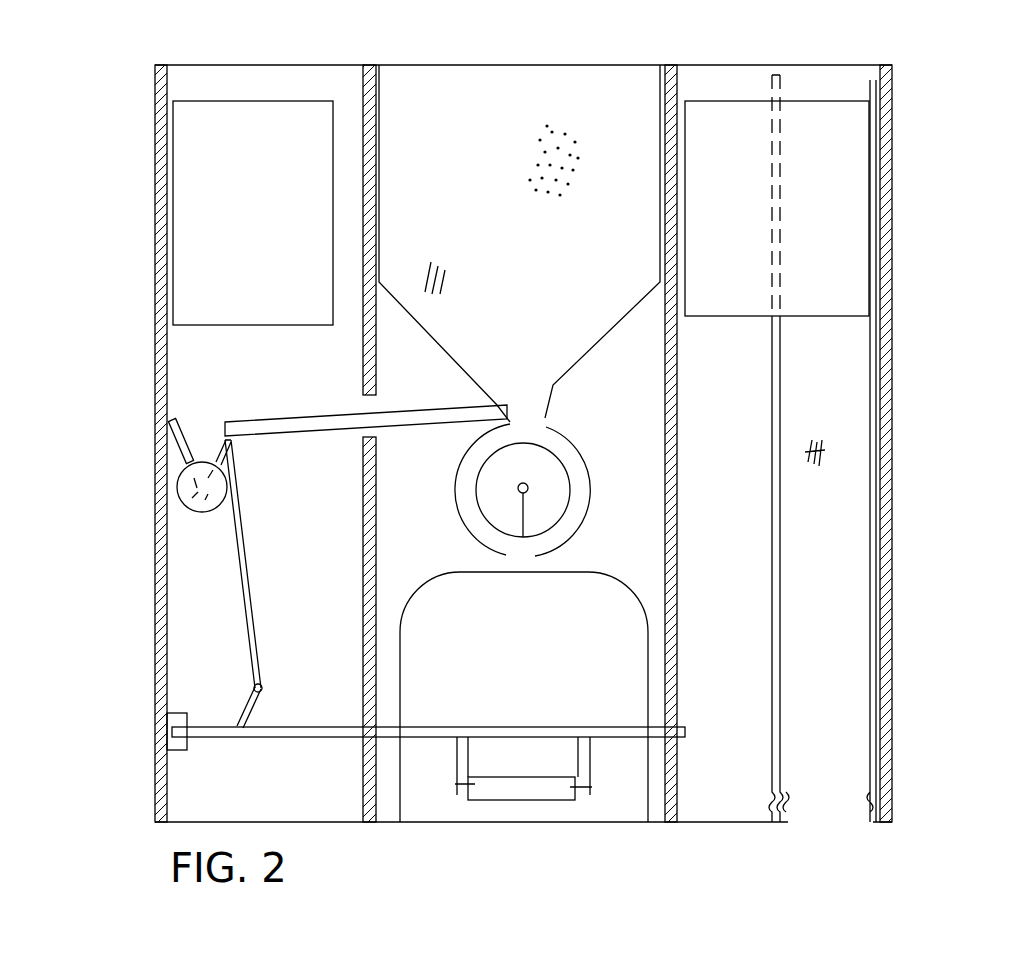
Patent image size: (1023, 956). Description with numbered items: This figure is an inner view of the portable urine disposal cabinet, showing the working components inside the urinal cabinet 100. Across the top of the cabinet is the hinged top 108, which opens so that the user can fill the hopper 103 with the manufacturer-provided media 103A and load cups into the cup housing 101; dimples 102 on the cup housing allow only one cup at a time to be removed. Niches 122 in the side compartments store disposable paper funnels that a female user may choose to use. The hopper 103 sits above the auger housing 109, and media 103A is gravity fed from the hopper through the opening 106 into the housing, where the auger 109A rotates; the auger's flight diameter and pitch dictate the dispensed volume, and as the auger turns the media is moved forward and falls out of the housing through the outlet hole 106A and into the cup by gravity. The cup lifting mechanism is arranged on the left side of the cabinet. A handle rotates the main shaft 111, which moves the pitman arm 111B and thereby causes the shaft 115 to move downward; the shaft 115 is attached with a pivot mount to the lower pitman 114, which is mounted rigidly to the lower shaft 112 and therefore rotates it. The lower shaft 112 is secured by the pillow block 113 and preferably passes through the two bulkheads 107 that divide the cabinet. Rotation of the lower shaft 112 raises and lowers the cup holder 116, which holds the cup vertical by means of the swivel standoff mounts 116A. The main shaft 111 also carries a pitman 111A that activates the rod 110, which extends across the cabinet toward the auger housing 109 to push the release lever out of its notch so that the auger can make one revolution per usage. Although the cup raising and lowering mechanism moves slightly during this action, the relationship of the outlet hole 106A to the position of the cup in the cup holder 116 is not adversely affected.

The urinal cabinet 100 is at (889, 330).
The cup housing 101 is at (808, 452).
The dimples 102 is at (775, 803).
The hopper 103 is at (442, 304).
The media 103A is at (541, 193).
The opening 106 is at (519, 412).
The outlet hole 106A is at (522, 556).
The bulkheads 107 is at (404, 24).
The top 108 is at (531, 62).
The housing 109 is at (589, 453).
The auger 109A is at (545, 495).
The rod 110 is at (310, 420).
The main shaft 111 is at (214, 490).
The pitman 111A is at (177, 451).
The pitman arm 111B is at (220, 447).
The lower shaft 112 is at (616, 742).
The pillow block 113 is at (172, 744).
The lower pitman 114 is at (259, 705).
The shaft 115 is at (258, 600).
The cup holder 116 is at (514, 796).
The swivel standoff mounts 116A is at (450, 765).
The niches 122 is at (215, 192).